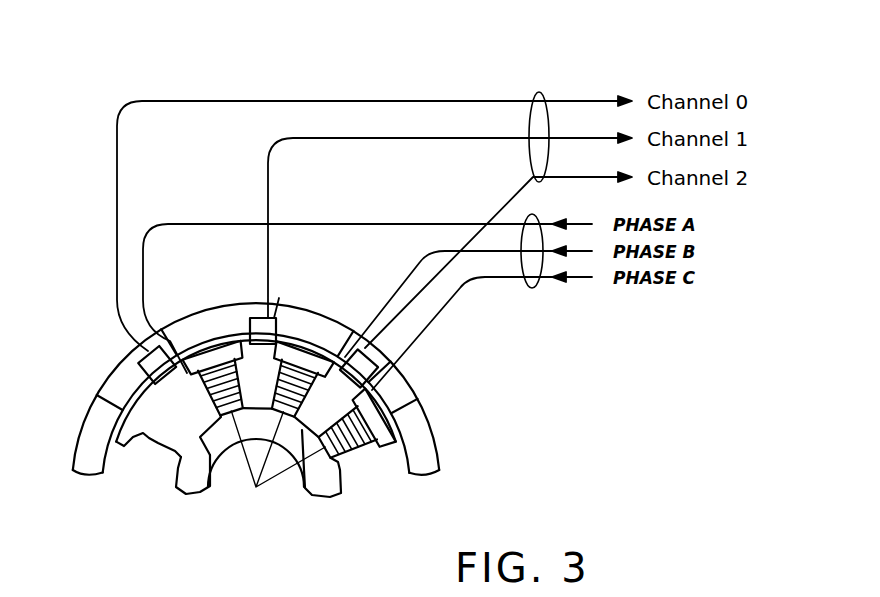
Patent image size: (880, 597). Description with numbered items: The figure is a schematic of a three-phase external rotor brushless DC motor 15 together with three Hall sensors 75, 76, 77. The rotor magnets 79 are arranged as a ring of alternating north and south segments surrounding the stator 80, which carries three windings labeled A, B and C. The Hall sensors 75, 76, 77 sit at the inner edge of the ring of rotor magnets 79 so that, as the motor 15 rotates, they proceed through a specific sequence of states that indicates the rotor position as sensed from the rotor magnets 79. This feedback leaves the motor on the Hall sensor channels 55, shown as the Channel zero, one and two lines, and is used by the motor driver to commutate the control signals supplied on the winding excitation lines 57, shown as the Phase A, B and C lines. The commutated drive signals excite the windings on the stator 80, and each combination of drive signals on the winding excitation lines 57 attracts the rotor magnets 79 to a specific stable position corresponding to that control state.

The three-phase external rotor brushless DC motor 15 is at (503, 432).
The Hall sensor channels 55 is at (541, 92).
The winding excitation lines 57 is at (528, 288).
The Hall sensor 75 is at (142, 353).
The Hall sensor 76 is at (277, 316).
The Hall sensor 77 is at (371, 352).
The rotor magnets 79 is at (219, 304).
The stator 80 is at (345, 470).